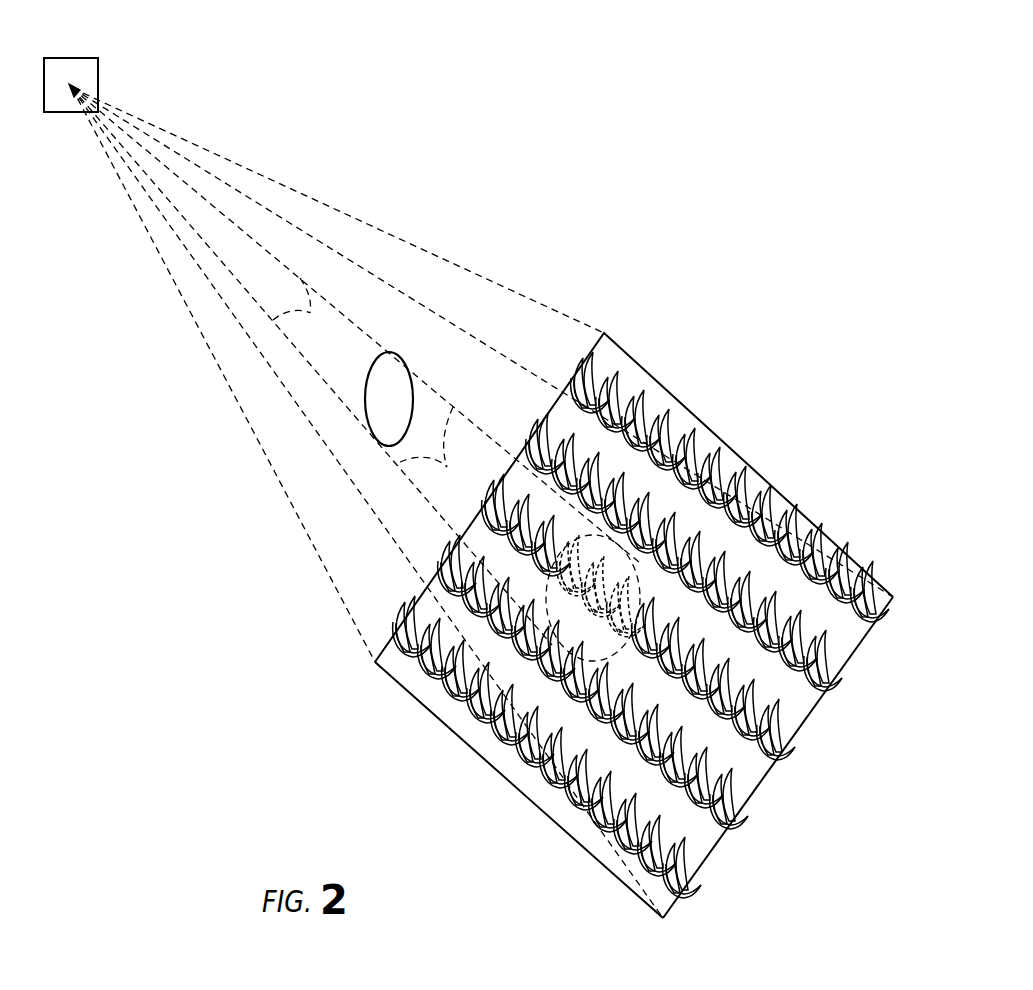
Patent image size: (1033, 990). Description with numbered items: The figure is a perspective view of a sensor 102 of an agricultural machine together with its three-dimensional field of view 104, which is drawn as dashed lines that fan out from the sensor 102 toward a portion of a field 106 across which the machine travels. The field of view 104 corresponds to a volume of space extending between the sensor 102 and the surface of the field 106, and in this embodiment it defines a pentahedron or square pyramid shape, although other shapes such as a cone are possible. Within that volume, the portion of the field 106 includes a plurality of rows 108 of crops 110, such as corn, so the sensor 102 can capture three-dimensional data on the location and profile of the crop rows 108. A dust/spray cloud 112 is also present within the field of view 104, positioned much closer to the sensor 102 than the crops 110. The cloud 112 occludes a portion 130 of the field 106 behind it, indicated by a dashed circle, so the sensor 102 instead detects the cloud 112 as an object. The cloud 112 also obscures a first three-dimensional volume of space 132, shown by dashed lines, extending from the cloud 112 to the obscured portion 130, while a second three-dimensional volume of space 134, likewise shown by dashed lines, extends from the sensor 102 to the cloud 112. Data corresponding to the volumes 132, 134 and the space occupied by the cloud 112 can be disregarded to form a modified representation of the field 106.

The sensor 102 is at (64, 58).
The field of view 104 is at (310, 233).
The field 106 is at (740, 456).
The rows 108 is at (824, 695).
The crops 110 is at (603, 380).
The dust/spray cloud 112 is at (405, 413).
The portion of the field 130 is at (640, 600).
The first three-dimensional volume of space 132 is at (434, 454).
The second three-dimensional volume of space 134 is at (306, 317).